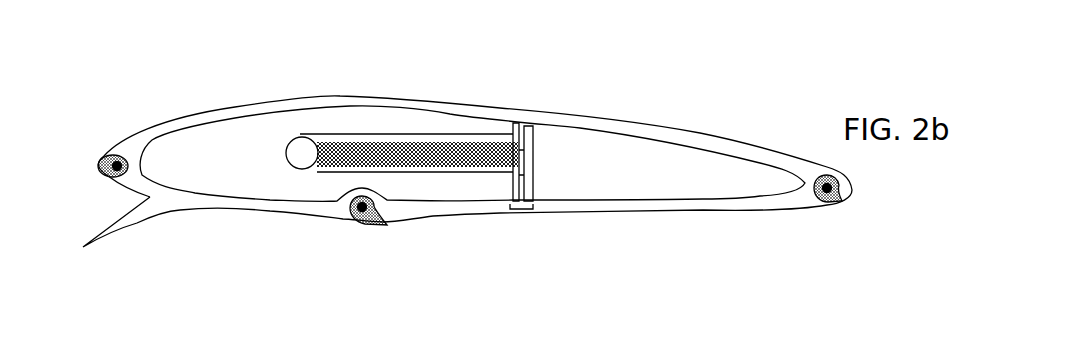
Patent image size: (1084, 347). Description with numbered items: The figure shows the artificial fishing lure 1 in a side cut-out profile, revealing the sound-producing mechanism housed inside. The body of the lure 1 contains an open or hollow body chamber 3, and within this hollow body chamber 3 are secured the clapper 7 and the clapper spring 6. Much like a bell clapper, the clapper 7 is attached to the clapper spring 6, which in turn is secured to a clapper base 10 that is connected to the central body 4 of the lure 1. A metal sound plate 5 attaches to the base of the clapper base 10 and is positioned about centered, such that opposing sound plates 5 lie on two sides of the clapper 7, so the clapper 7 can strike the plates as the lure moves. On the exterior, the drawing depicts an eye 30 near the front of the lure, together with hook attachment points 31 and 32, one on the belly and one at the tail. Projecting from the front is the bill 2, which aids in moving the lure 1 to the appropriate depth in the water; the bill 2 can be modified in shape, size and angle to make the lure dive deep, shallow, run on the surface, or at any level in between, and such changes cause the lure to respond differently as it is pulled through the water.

The fishing lure 1 is at (705, 210).
The bill 2 is at (118, 233).
The hollow body chamber 3 is at (220, 175).
The central body 4 is at (522, 211).
The metal sound plate 5 is at (406, 208).
The clapper spring 6 is at (392, 166).
The clapper 7 is at (302, 157).
The clapper base 10 is at (527, 180).
The eye 30 is at (107, 155).
The hook attachment point 31 is at (360, 213).
The hook attachment point 32 is at (835, 202).